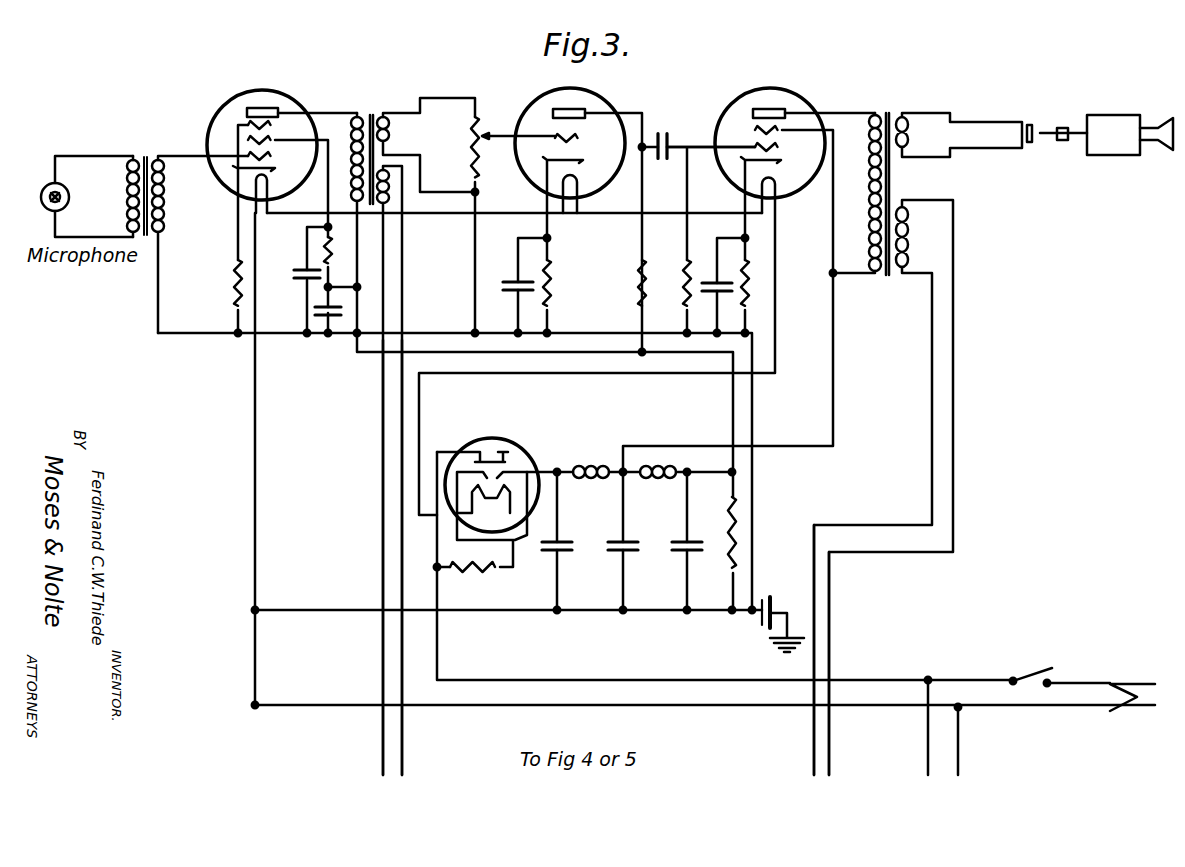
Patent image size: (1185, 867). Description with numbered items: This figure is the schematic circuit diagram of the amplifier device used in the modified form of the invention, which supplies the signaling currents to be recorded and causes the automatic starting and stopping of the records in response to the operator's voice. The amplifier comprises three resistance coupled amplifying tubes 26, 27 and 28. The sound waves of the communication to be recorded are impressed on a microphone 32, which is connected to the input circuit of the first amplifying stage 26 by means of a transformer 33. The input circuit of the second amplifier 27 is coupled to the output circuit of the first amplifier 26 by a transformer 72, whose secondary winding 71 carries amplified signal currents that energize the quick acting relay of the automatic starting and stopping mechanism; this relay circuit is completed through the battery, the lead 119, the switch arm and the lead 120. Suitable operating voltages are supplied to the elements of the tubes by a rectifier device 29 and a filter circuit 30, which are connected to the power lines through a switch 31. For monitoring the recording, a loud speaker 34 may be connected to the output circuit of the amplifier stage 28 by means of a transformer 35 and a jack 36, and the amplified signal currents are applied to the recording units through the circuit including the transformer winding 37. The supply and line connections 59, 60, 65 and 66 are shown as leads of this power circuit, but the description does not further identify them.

The amplifying tube 26 is at (262, 89).
The amplifying tube 27 is at (566, 92).
The amplifying tube 28 is at (772, 90).
The rectifier device 29 is at (487, 440).
The filter circuit 30 is at (601, 455).
The switch 31 is at (1038, 668).
The microphone 32 is at (44, 183).
The transformer 33 is at (146, 150).
The loud speaker 34 is at (1162, 120).
The transformer 35 is at (888, 106).
The jack 36 is at (1063, 127).
The transformer winding 37 is at (905, 247).
The power lead 59 is at (832, 753).
The power lead 60 is at (812, 748).
The supply line lead 65 is at (960, 765).
The supply line lead 66 is at (925, 757).
The secondary winding 71 is at (388, 198).
The transformer 72 is at (371, 108).
The lead 119 is at (405, 751).
The lead 120 is at (380, 750).